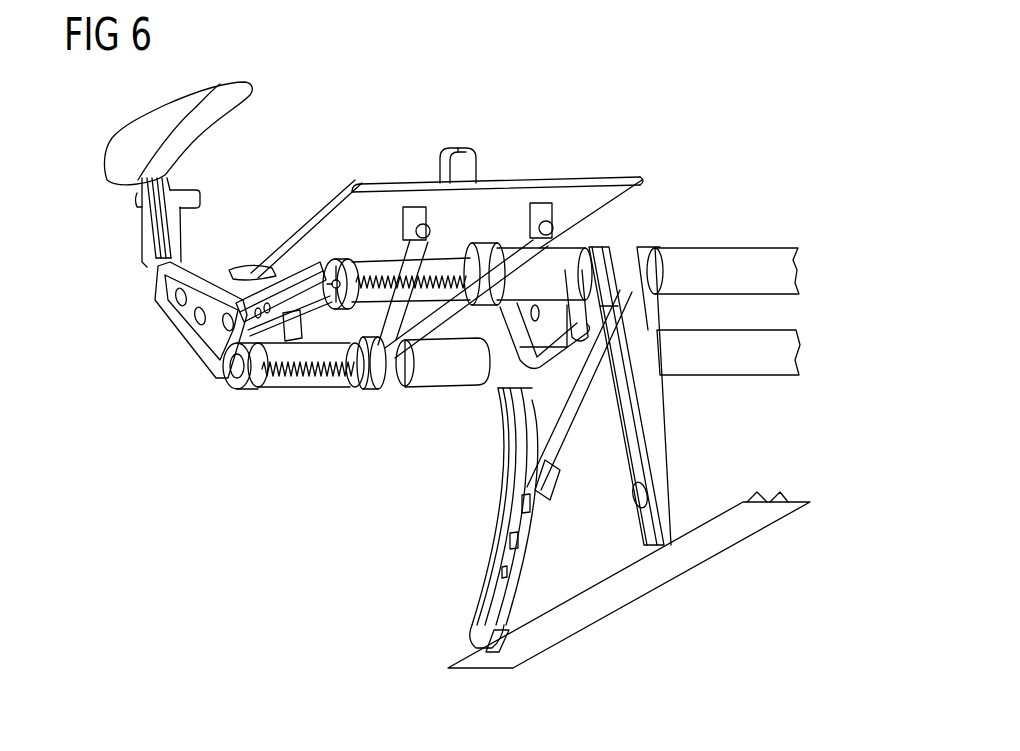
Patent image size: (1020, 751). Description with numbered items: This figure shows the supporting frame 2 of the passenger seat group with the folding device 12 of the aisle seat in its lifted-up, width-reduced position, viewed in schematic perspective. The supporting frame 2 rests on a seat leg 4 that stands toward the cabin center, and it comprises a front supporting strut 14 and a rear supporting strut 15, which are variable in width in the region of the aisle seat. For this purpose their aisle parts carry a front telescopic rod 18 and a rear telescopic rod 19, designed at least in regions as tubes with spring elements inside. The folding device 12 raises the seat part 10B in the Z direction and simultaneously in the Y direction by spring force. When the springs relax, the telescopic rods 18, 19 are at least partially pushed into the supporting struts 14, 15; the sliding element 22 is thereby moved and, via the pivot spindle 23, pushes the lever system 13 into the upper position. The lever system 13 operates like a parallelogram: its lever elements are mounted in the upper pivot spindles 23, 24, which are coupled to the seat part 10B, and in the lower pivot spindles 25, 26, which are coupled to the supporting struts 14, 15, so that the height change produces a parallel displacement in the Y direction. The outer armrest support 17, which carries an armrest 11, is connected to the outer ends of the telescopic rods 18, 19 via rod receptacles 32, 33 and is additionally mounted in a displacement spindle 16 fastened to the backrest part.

The supporting frame 2 is at (657, 218).
The seat leg 4 is at (668, 462).
The seat part 10B is at (510, 182).
The armrest 11 is at (118, 178).
The folding device 12 is at (478, 409).
The lever system 13 is at (441, 255).
The front supporting strut 14 is at (740, 255).
The rear supporting strut 15 is at (718, 372).
The displacement spindle 16 is at (198, 196).
The outer armrest support 17 is at (205, 340).
The front telescopic rod 18 is at (368, 220).
The rear telescopic rod 19 is at (277, 384).
The sliding element 22 is at (300, 264).
The pivot spindle 23 is at (427, 215).
The pivot spindle 24 is at (548, 220).
The pivot spindle 25 is at (582, 378).
The pivot spindle 26 is at (433, 387).
The rod receptacle 32 is at (331, 258).
The rod receptacle 33 is at (232, 374).